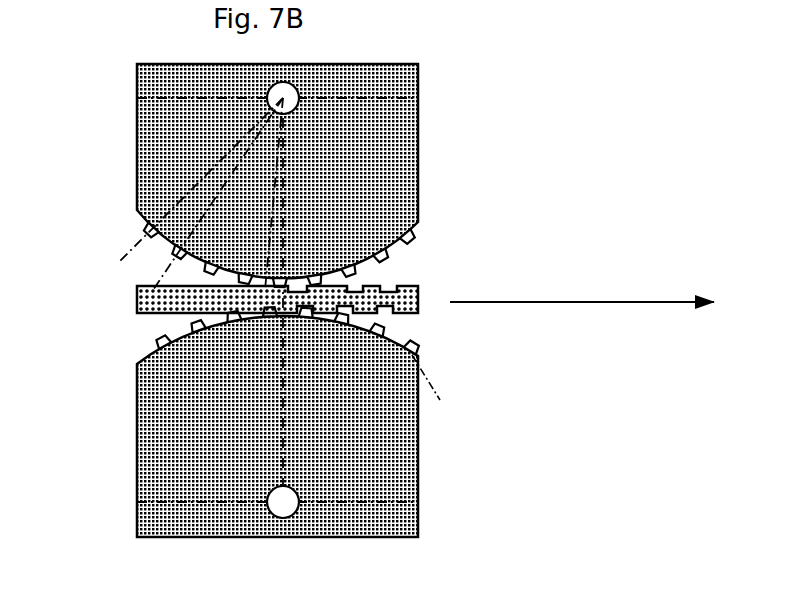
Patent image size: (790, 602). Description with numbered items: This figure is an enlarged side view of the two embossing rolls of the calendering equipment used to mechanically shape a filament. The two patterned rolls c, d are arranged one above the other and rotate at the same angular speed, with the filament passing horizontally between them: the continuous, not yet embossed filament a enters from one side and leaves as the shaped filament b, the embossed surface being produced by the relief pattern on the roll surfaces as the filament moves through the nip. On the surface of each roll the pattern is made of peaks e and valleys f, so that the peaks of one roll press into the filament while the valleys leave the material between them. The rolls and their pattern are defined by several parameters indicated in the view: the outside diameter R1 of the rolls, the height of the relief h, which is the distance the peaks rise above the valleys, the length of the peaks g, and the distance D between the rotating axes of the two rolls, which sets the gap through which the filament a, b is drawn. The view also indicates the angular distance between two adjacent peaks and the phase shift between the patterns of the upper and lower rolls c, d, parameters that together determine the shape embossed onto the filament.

The filament a is at (132, 293).
The shaped filament b is at (424, 286).
The roll c is at (154, 81).
The roll d is at (404, 478).
The peak e is at (421, 355).
The valley f is at (394, 347).
The length of the peaks g is at (173, 321).
The height of the relief h is at (416, 410).
The tooth pitch p is at (123, 257).
The distance between the rotating axes of the rolls D is at (137, 98).
The outside diameter R1 is at (283, 502).